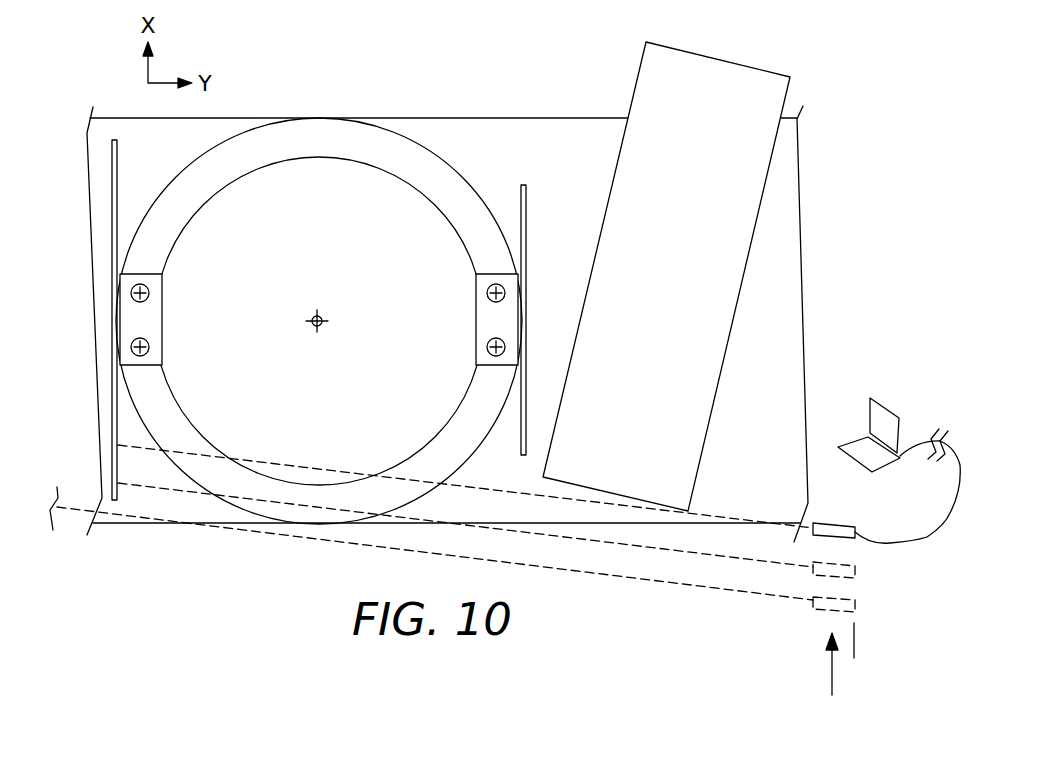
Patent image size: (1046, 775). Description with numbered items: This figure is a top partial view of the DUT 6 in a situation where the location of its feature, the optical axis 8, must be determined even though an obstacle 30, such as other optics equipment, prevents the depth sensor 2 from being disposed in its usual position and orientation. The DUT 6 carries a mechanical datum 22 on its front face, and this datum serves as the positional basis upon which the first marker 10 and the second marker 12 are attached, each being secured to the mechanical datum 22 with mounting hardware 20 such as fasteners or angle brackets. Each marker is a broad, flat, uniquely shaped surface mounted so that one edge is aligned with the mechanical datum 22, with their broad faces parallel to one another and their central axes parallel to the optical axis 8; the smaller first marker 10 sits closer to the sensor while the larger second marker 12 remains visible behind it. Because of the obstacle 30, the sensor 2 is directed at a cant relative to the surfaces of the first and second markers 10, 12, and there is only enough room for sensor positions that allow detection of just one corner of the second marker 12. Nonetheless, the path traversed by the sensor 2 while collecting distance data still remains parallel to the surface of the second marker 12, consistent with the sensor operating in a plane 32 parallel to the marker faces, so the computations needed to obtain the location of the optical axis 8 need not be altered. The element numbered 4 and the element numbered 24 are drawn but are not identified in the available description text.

The depth sensor 2 is at (855, 530).
The computer 4 is at (856, 438).
The DUT 6 is at (258, 118).
The optical axis 8 is at (315, 313).
The first marker 10 is at (521, 217).
The second marker 12 is at (112, 170).
The mounting hardware 20 is at (163, 345).
The mechanical datum 22 is at (387, 132).
The inner opening 24 is at (417, 208).
The obstacle 30 is at (666, 276).
The plane 32 is at (854, 633).